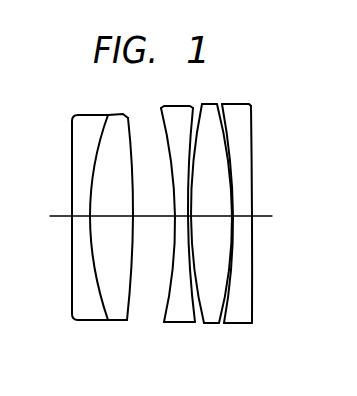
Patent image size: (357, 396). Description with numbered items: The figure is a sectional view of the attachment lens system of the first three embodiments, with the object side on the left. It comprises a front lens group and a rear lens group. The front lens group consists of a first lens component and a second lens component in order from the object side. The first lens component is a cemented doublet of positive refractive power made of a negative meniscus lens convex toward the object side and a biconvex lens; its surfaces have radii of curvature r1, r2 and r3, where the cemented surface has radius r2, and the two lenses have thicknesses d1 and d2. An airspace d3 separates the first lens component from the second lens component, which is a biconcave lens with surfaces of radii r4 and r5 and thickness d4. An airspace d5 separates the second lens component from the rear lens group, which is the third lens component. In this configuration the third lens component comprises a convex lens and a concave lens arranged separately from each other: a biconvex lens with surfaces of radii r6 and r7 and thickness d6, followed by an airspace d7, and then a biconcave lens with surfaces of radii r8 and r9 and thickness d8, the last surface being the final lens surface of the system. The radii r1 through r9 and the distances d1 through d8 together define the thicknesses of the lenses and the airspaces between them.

The radius of curvature of first lens surface r1 is at (72, 309).
The radius of curvature of cemented surface of first lens component r2 is at (112, 309).
The radius of curvature of third lens surface r3 is at (130, 306).
The radius of curvature of fourth lens surface r4 is at (164, 308).
The radius of curvature of fifth lens surface r5 is at (197, 327).
The radius of curvature of object-side surface of biconvex lens in third lens compon r6 is at (207, 316).
The radius of curvature of image-side surface of biconvex lens in third lens compone r7 is at (222, 322).
The radius of curvature of eighth lens surface r8 is at (228, 310).
The radius of curvature of final lens surface r9 is at (253, 303).
The thickness of negative meniscus lens d1 is at (74, 215).
The thickness of biconvex lens of first lens component d2 is at (113, 216).
The airspace between first lens component and second lens component d3 is at (152, 214).
The thickness of second lens component d4 is at (182, 218).
The airspace between second lens component and third lens component d5 is at (187, 214).
The thickness of biconvex lens of third lens component d6 is at (207, 218).
The airspace between lenses of third lens component d7 is at (236, 219).
The thickness of biconcave lens of third lens component d8 is at (243, 214).